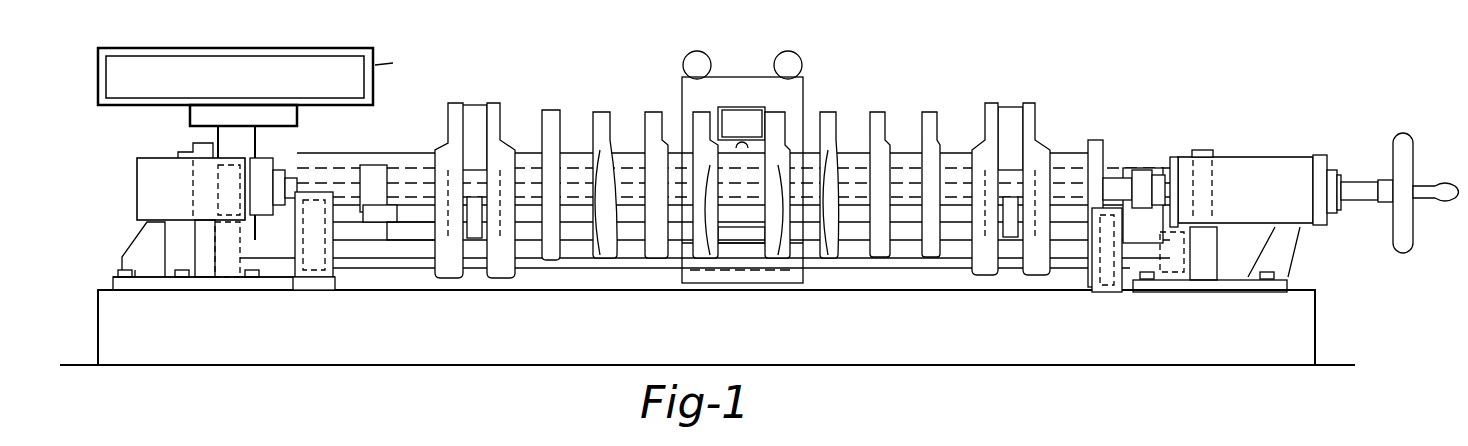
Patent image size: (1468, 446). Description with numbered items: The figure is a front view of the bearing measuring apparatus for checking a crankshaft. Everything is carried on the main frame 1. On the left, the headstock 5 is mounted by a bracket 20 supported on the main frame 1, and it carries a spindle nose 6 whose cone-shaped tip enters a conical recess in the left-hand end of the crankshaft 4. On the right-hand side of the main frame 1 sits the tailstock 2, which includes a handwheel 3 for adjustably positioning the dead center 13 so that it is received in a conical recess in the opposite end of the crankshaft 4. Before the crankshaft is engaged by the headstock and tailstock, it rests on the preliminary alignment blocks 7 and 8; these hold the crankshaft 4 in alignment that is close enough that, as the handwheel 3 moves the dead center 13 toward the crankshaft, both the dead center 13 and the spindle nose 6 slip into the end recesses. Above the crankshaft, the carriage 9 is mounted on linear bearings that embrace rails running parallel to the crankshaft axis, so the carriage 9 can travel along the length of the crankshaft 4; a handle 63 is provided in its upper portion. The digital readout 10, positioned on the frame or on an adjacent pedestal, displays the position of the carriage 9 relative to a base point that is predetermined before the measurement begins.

The main frame 1 is at (1310, 322).
The tailstock 2 is at (1291, 147).
The handwheel 3 is at (1393, 236).
The crankshaft 4 is at (1045, 114).
The headstock 5 is at (137, 196).
The spindle nose 6 is at (287, 178).
The preliminary alignment block 7 is at (1120, 228).
The preliminary alignment block 8 is at (333, 226).
The carriage 9 is at (674, 94).
The digital readout 10 is at (337, 96).
The dead center 13 is at (1124, 172).
The bracket 20 is at (157, 288).
The handle 63 is at (802, 65).